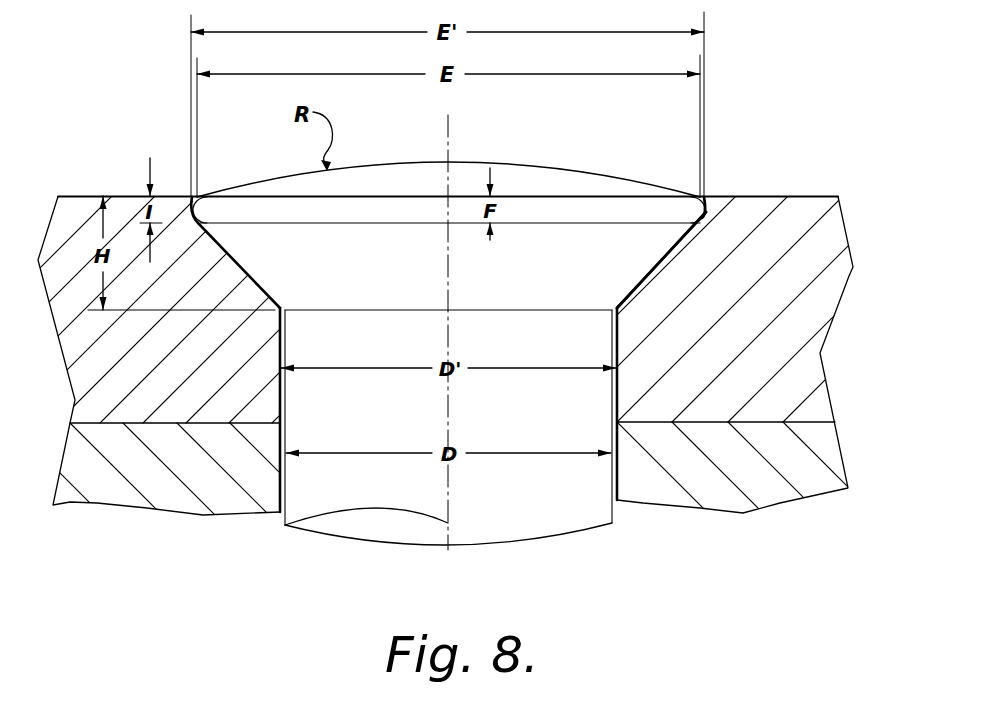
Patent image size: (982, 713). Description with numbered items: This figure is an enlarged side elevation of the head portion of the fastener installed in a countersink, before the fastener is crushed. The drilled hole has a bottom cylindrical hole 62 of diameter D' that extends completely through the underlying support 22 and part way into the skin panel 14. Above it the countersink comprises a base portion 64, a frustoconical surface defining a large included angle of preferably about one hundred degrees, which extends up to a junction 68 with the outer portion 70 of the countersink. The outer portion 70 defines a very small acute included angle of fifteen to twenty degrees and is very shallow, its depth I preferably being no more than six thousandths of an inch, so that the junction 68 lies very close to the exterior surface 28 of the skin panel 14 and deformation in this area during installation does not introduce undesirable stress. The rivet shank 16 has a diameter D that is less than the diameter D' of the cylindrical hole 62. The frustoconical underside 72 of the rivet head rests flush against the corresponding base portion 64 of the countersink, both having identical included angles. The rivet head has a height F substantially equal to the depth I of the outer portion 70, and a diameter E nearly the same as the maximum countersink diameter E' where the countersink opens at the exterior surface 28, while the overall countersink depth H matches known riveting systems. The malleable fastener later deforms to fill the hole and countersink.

The skin panel 14 is at (847, 242).
The rivet shank 16 is at (357, 480).
The underlying support 22 is at (777, 486).
The exterior surface 28 is at (760, 196).
The cylindrical hole 62 is at (615, 487).
The base portion of the countersink 64 is at (672, 250).
The junction 68 is at (714, 213).
The outer portion of the countersink 70 is at (197, 197).
The frustoconical underside 72 is at (628, 297).